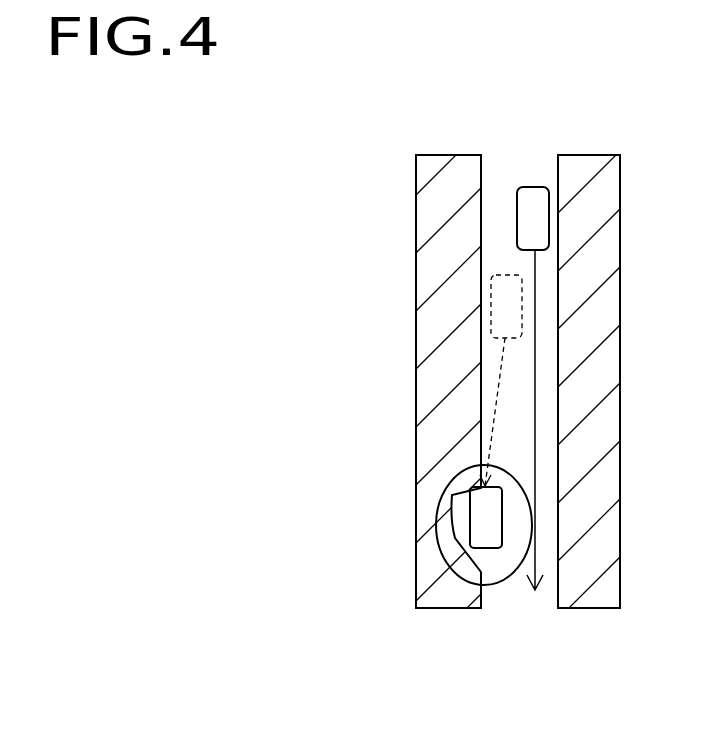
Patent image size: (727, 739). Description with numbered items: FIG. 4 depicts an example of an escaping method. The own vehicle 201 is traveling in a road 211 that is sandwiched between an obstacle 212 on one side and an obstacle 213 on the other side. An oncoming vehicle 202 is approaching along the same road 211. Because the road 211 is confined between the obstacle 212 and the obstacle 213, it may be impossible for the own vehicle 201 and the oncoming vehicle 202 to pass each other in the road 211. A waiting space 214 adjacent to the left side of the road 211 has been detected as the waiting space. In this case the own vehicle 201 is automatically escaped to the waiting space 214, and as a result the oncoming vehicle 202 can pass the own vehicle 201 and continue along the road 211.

The obstacle 212 is at (433, 156).
The obstacle 213 is at (580, 156).
The oncoming vehicle 202 is at (533, 187).
The own vehicle 201 is at (490, 549).
The waiting space 214 is at (500, 584).
The road 211 is at (545, 604).